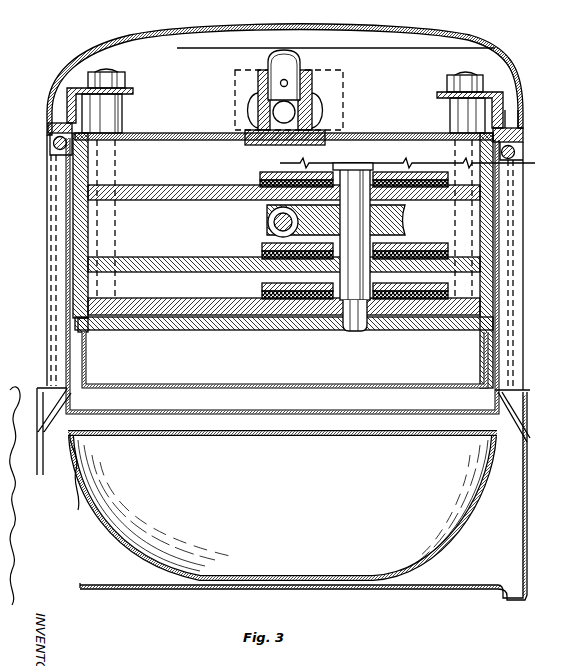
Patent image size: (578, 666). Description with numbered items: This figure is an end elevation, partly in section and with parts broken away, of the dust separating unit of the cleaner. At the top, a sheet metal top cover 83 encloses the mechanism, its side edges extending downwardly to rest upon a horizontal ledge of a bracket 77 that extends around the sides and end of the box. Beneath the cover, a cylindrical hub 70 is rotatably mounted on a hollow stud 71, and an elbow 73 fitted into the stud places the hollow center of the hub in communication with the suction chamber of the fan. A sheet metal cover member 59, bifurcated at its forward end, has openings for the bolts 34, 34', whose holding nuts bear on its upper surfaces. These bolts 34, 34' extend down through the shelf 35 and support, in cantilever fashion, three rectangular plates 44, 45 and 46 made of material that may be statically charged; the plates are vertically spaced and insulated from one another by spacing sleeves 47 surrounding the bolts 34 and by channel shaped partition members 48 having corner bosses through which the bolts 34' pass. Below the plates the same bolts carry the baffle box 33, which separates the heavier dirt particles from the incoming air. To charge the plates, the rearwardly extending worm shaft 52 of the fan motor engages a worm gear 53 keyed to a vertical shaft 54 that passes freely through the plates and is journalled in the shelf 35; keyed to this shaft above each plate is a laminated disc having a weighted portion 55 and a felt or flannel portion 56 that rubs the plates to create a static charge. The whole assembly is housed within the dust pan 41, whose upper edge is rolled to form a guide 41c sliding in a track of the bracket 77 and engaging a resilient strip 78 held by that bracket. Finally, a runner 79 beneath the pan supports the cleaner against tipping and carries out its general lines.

The top cover 83 is at (392, 33).
The elbow 73 is at (298, 56).
The hollow stud 71 is at (312, 90).
The cylindrical hub 70 is at (326, 108).
The bolt 34' is at (116, 176).
The bolt 34 is at (456, 177).
The sheet metal cover member 59 is at (133, 91).
The spacing sleeve 47 is at (122, 120).
The guide 41c is at (50, 143).
The dust pan 41 is at (499, 240).
The channel shaped partition member 48 is at (90, 180).
The plate 46 is at (147, 186).
The plate 45 is at (147, 258).
The plate 44 is at (147, 299).
The shelf 35 is at (203, 330).
The baffle box 33 is at (228, 386).
The weighted portion 55 is at (265, 174).
The portion of felt or flannel 56 is at (262, 183).
The worm shaft 52 is at (268, 220).
The worm gear 53 is at (405, 220).
The vertical shaft 54 is at (348, 331).
The bracket 77 is at (508, 124).
The strip of resilient material 78 is at (523, 134).
The runner 79 is at (529, 496).